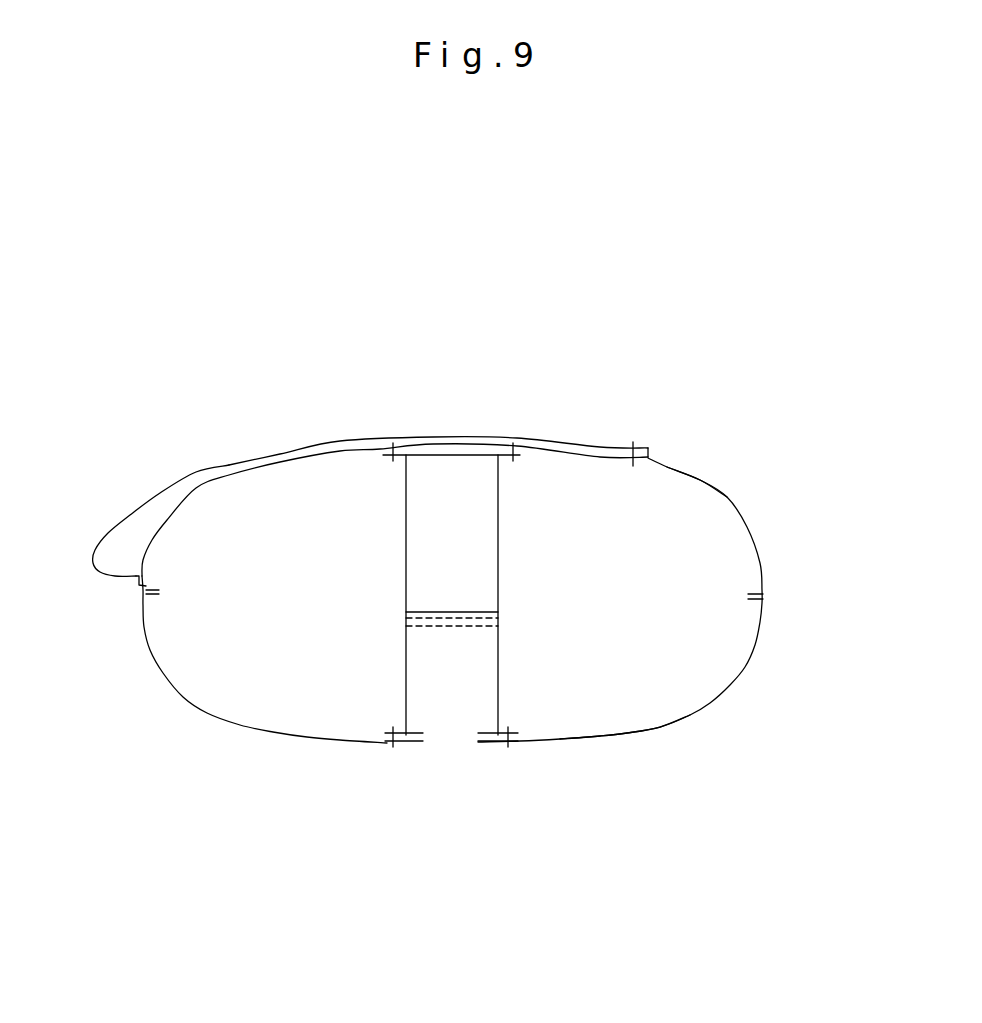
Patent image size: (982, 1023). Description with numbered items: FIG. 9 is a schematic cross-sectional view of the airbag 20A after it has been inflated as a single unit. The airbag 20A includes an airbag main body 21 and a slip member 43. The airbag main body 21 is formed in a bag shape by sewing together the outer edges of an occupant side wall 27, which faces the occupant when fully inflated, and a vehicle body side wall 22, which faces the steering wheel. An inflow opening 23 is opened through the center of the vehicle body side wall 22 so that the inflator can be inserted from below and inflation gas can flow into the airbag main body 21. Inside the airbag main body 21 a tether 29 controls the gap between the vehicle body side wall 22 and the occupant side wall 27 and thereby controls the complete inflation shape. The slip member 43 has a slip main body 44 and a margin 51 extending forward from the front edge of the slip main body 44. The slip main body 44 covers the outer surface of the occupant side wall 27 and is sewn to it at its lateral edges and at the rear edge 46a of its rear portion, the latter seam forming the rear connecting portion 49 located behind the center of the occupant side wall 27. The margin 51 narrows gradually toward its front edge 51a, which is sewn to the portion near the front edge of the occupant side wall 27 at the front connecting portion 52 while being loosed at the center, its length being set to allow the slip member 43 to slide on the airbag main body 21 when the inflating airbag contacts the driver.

The airbag 20A is at (743, 305).
The airbag main body 21 is at (735, 492).
The vehicle body side wall 22 is at (625, 733).
The inflow opening 23 is at (450, 752).
The occupant side wall 27 is at (697, 480).
The tether 29 is at (506, 617).
The slip member 43 is at (346, 418).
The slip main body 44 is at (452, 437).
The rear edge of the rear portion 46a is at (648, 455).
The rear connecting portion 49 is at (634, 446).
The margin 51 is at (118, 510).
The front edge of the margin 51a is at (139, 578).
The front connecting portion 52 is at (145, 576).